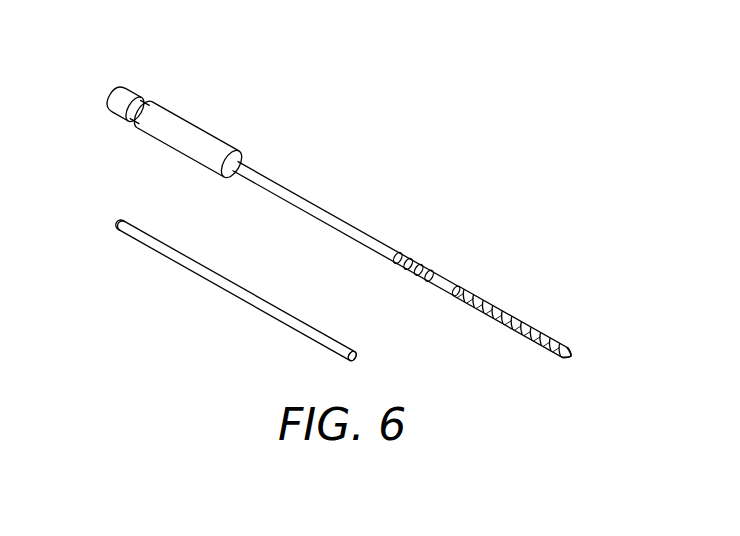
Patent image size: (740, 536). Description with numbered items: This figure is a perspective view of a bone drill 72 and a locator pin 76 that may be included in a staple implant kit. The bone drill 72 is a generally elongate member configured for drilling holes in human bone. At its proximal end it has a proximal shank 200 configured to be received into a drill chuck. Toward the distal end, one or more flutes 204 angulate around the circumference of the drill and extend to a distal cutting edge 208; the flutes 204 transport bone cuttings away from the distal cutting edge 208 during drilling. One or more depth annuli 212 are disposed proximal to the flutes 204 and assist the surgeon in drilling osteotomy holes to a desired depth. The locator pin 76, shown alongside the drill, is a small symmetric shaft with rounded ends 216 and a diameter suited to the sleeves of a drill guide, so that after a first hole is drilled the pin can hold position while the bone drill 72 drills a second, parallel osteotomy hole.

The proximal shank 200 is at (130, 88).
The bone drill 72 is at (323, 203).
The depth annuli 212 is at (422, 262).
The flutes 204 is at (478, 298).
The distal cutting edge 208 is at (575, 353).
The locator pin 76 is at (242, 300).
The rounded ends 216 is at (118, 220).